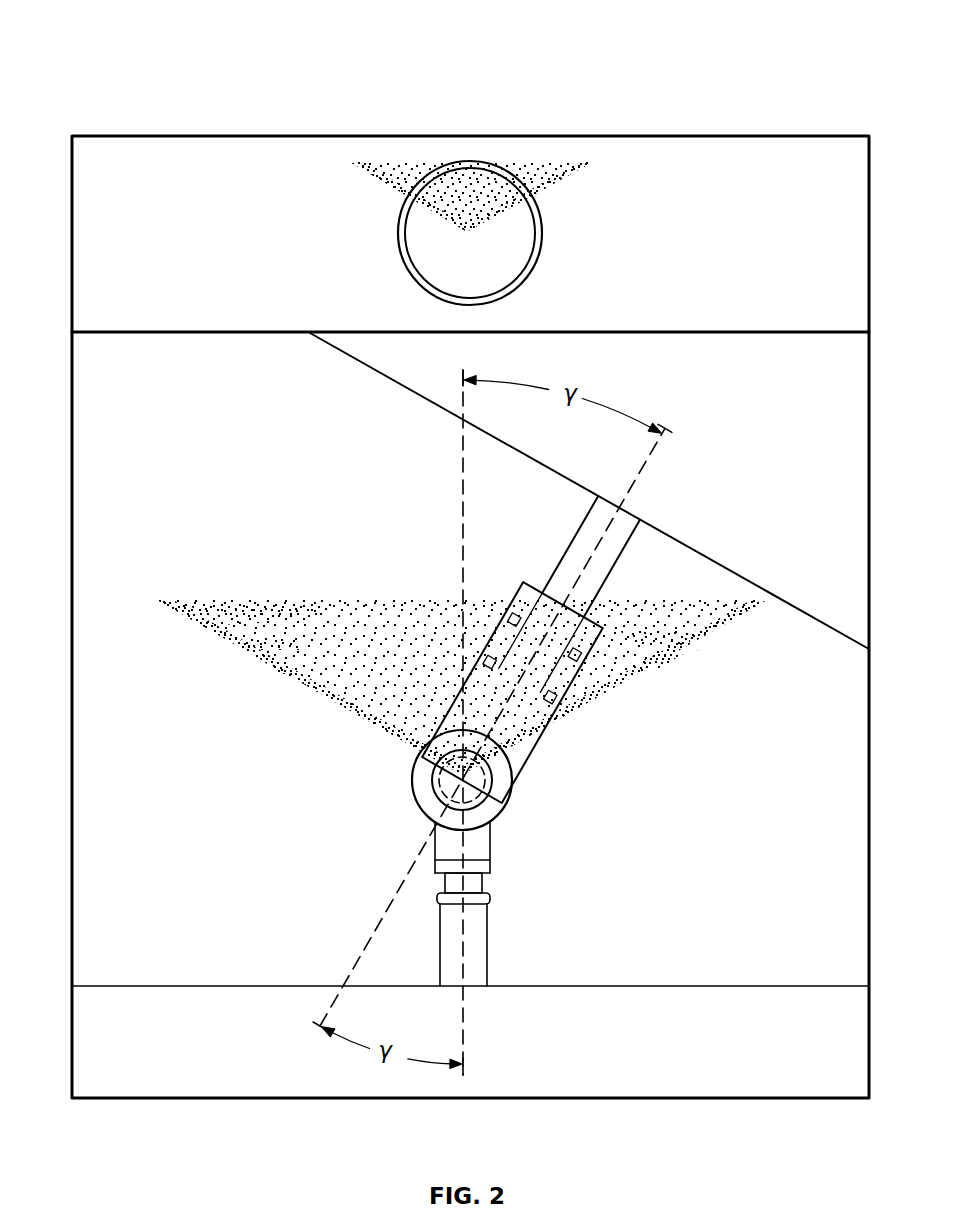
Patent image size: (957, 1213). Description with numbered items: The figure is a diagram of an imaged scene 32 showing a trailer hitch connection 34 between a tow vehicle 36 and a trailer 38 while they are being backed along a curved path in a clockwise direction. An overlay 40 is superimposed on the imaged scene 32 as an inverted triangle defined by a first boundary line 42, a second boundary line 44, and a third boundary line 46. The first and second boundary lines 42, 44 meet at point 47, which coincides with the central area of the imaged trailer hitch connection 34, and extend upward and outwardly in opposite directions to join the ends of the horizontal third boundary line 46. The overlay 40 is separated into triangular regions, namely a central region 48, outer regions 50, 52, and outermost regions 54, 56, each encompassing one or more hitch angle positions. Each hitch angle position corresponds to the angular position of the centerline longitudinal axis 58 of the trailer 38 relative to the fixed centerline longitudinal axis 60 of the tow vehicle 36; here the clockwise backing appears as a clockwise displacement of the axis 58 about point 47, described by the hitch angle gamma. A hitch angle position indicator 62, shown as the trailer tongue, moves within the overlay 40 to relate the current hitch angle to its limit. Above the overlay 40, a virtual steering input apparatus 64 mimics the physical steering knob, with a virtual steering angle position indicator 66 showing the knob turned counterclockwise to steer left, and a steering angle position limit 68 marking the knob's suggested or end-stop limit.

The imaged scene 32 is at (725, 80).
The trailer hitch connection 34 is at (490, 806).
The tow vehicle 36 is at (177, 985).
The trailer 38 is at (367, 365).
The overlay 40 is at (447, 640).
The first boundary line 42 is at (307, 688).
The second boundary line 44 is at (617, 687).
The third boundary line 46 is at (677, 600).
The point 47 is at (462, 780).
The central region 48 is at (317, 613).
The outer region 50 is at (293, 636).
The outer region 52 is at (640, 635).
The outermost region 54 is at (283, 668).
The outermost region 56 is at (650, 670).
The centerline longitudinal axis of the trailer 58 is at (641, 472).
The centerline longitudinal axis of the tow vehicle 60 is at (466, 1010).
The hitch angle position indicator 62 is at (580, 530).
The virtual steering input apparatus 64 is at (543, 215).
The virtual steering angle position indicator 66 is at (467, 167).
The steering angle position limit 68 is at (430, 215).